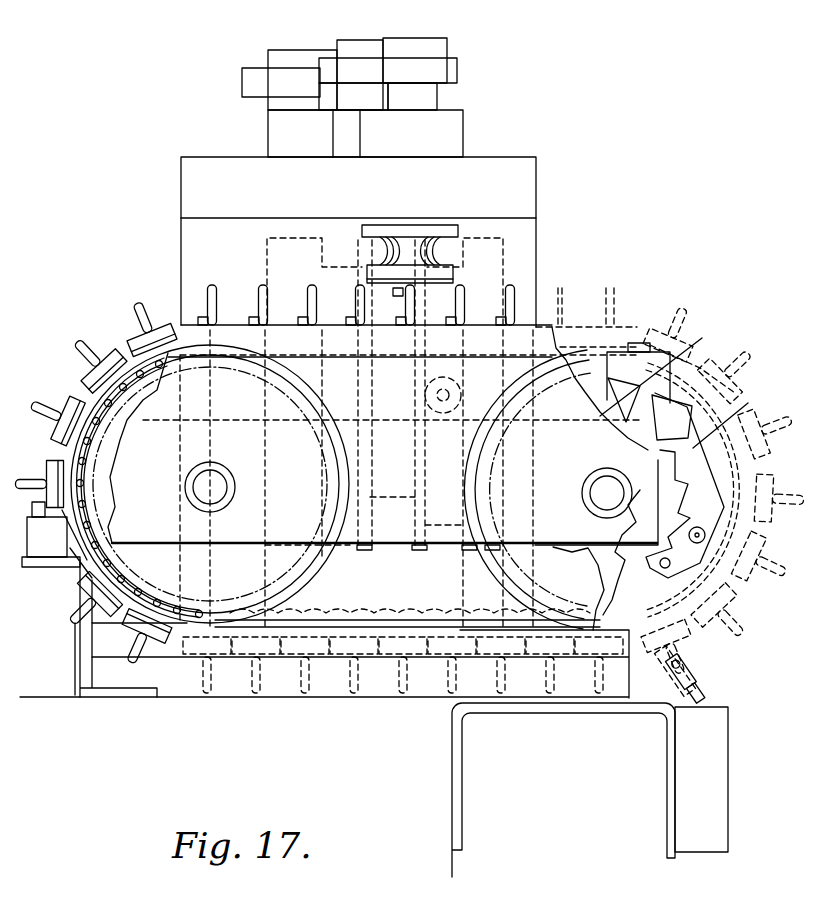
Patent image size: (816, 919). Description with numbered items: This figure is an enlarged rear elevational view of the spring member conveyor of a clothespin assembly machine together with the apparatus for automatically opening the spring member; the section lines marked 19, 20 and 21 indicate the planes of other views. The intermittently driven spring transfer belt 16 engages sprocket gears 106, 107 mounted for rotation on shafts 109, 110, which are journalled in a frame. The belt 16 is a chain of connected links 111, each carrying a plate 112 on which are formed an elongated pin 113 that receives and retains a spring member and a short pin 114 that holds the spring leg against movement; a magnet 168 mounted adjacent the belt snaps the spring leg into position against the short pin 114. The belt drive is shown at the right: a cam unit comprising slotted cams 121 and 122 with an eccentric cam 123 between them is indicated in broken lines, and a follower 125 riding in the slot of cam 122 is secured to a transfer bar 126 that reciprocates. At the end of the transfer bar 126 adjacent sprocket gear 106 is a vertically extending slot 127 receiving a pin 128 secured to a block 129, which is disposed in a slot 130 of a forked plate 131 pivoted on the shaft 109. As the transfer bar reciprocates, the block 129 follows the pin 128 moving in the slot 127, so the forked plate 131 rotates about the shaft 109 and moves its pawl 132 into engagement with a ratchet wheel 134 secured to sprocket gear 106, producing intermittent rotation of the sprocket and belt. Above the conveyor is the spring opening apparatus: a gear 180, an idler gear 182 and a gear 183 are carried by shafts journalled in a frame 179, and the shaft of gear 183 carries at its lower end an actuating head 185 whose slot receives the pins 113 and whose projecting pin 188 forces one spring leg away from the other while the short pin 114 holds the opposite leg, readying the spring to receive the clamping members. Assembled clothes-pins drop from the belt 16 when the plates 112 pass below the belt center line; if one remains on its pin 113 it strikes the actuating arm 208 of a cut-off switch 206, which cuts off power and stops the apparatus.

The spring transfer belt 16 is at (113, 340).
The section line 19 is at (640, 460).
The section line 20 is at (603, 802).
The section line 21 is at (212, 325).
The sprocket gear 106 is at (486, 562).
The sprocket gear 107 is at (310, 560).
The shaft 109 is at (597, 490).
The shaft 110 is at (218, 480).
The links 111 is at (128, 414).
The plate 112 is at (80, 382).
The elongated pin 113 is at (414, 304).
The short pin 114 is at (85, 358).
The slotted cam 121 is at (268, 252).
The slotted cam 122 is at (490, 262).
The eccentric cam 123 is at (391, 574).
The follower 125 is at (443, 413).
The transfer bar 126 is at (405, 400).
The vertically extending slot 127 is at (672, 360).
The pin 128 is at (695, 394).
The block 129 is at (592, 392).
The slot 130 is at (657, 377).
The forked plate 131 is at (716, 396).
The pawl 132 is at (626, 552).
The ratchet wheel 134 is at (629, 485).
The magnet 168 is at (45, 535).
The frame 179 is at (505, 175).
The gear 180 is at (248, 70).
The idler gear 182 is at (351, 62).
The gear 183 is at (452, 67).
The actuating head 185 is at (380, 226).
The projecting pin 188 is at (398, 290).
The cut-off switch 206 is at (718, 778).
The actuating arm 208 is at (702, 676).